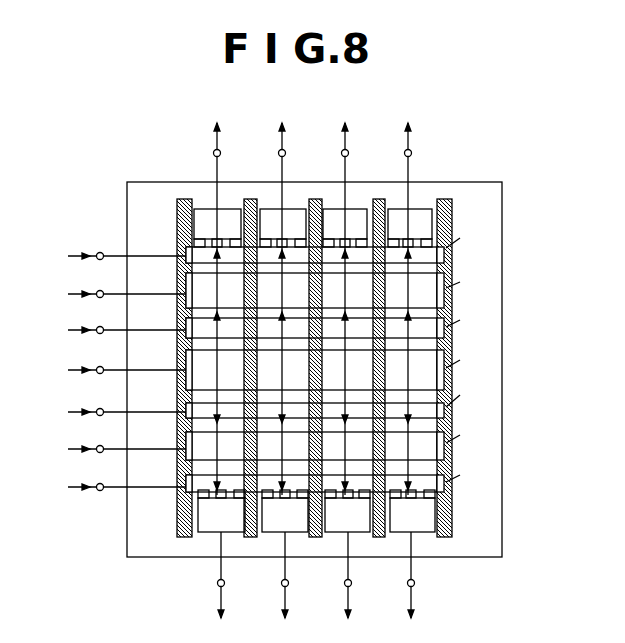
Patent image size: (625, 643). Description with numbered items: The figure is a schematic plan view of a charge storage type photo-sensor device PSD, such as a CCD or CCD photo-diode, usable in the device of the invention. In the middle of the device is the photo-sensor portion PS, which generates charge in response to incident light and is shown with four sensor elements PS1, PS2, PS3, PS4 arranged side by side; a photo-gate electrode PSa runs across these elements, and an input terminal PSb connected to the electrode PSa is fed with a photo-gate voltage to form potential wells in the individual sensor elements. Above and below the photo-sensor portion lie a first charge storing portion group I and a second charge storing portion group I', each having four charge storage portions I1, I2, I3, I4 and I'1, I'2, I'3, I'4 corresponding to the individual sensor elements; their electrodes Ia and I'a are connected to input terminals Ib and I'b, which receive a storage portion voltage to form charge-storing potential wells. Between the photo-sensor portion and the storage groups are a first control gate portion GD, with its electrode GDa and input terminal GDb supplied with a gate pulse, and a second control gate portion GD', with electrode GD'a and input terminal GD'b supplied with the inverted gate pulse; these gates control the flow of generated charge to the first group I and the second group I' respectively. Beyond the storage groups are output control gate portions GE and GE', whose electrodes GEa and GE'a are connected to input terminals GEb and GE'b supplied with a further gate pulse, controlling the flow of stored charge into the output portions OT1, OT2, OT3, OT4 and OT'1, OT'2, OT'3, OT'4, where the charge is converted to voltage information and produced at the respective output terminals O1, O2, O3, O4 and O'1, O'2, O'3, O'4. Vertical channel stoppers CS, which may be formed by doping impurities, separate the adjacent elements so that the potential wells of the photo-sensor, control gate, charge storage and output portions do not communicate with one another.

The photo-sensor device PSD is at (147, 172).
The channel stopper CS is at (184, 537).
The output control gate portion GE is at (362, 250).
The first charge storing portion group I is at (360, 290).
The first control gate portion GD is at (363, 333).
The photo-sensor portion PS is at (461, 368).
The second control gate portion GD' is at (363, 413).
The second charge storing portion group I' is at (361, 447).
The output control gate portion GE' is at (363, 485).
The electrode GEa is at (469, 232).
The electrode Ia is at (464, 277).
The electrode GDa is at (469, 314).
The photo-gate electrode PSa is at (468, 355).
The electrode GD'a is at (471, 392).
The electrode I'a is at (464, 430).
The electrode GE'a is at (469, 469).
The input terminal GEb is at (110, 267).
The input terminal Ib is at (116, 305).
The input terminal GDb is at (110, 343).
The input terminal PSb is at (116, 383).
The input terminal GD'b is at (110, 423).
The input terminal I'b is at (116, 461).
The input terminal GE'b is at (110, 500).
The output terminal O1 is at (221, 152).
The output terminal O2 is at (286, 152).
The output terminal O3 is at (349, 152).
The output terminal O4 is at (412, 152).
The output terminal O'1 is at (235, 579).
The output terminal O'2 is at (299, 579).
The output terminal O'3 is at (362, 579).
The output terminal O'4 is at (425, 579).
The output portion OT1 is at (217, 228).
The output portion OT2 is at (283, 228).
The output portion OT3 is at (345, 228).
The output portion OT4 is at (410, 228).
The output portion OT'1 is at (221, 511).
The output portion OT'2 is at (285, 511).
The output portion OT'3 is at (347, 511).
The output portion OT'4 is at (412, 511).
The charge storage portion I1 is at (215, 298).
The charge storage portion I2 is at (280, 298).
The charge storage portion I3 is at (343, 298).
The charge storage portion I4 is at (406, 298).
The charge storage portion I'1 is at (217, 455).
The charge storage portion I'2 is at (282, 455).
The charge storage portion I'3 is at (345, 455).
The charge storage portion I'4 is at (408, 455).
The sensor element PS1 is at (218, 391).
The sensor element PS2 is at (283, 391).
The sensor element PS3 is at (346, 391).
The sensor element PS4 is at (409, 391).